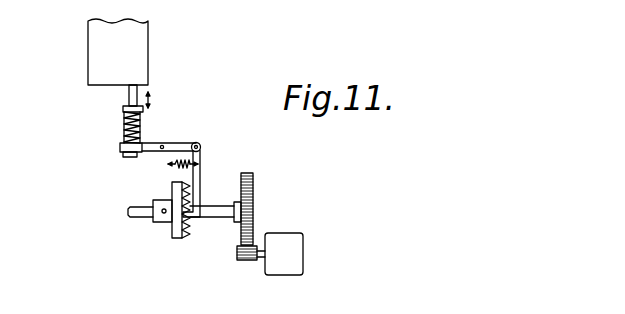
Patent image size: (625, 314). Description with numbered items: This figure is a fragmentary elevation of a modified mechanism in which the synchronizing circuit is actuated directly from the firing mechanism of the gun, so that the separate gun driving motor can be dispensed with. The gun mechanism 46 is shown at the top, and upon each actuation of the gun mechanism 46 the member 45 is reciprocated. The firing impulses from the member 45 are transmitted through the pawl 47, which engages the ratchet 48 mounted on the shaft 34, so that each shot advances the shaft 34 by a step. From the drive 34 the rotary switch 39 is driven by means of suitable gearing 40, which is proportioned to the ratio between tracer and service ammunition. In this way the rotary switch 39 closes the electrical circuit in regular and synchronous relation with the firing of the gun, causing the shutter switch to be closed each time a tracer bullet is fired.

The gun mechanism 46 is at (94, 55).
The member 45 is at (128, 97).
The pawl 47 is at (200, 182).
The ratchet 48 is at (173, 235).
The drive 34 is at (217, 212).
The gearing 40 is at (253, 188).
The rotary switch 39 is at (290, 240).